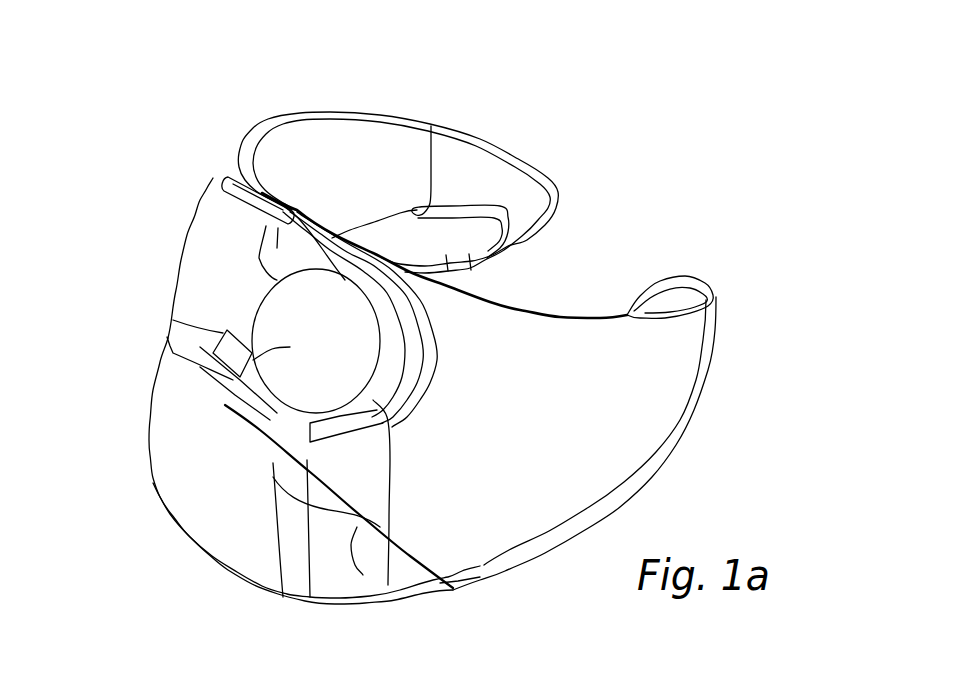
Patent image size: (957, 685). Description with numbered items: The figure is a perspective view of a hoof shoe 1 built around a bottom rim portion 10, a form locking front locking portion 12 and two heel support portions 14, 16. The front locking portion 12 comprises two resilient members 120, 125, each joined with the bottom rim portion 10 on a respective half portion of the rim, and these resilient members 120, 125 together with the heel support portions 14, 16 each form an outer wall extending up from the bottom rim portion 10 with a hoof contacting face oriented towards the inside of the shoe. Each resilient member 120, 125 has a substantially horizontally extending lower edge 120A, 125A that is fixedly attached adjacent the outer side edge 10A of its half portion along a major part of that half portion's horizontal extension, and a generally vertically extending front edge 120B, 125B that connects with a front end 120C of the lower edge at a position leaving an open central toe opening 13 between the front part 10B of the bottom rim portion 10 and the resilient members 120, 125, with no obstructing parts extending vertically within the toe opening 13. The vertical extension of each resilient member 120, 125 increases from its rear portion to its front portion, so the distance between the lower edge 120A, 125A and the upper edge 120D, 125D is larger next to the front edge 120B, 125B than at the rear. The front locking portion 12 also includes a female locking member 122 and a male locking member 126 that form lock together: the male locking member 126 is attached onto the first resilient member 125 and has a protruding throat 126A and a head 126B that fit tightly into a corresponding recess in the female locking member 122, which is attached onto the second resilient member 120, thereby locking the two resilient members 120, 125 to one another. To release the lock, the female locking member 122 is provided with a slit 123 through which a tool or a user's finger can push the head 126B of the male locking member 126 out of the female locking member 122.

The hoof shoe 1 is at (600, 106).
The bottom rim portion 10 is at (173, 487).
The outer side edge 10A is at (610, 503).
The front part 10B is at (216, 508).
The front locking portion 12 is at (294, 177).
The central toe opening 13 is at (153, 550).
The heel support portion 14 is at (704, 266).
The heel support portion 16 is at (570, 190).
The resilient member 120 is at (283, 600).
The lower edge 120A is at (660, 465).
The front edge 120B is at (365, 588).
The front end 120C is at (446, 597).
The upper edge 120D is at (540, 305).
The female locking member 122 is at (390, 593).
The slit 123 is at (315, 600).
The resilient member 125 is at (243, 142).
The lower edge 125A is at (437, 128).
The front edge 125B is at (170, 352).
The upper edge 125D is at (273, 117).
The male locking member 126 is at (228, 178).
The throat 126A is at (250, 305).
The head 126B is at (185, 368).